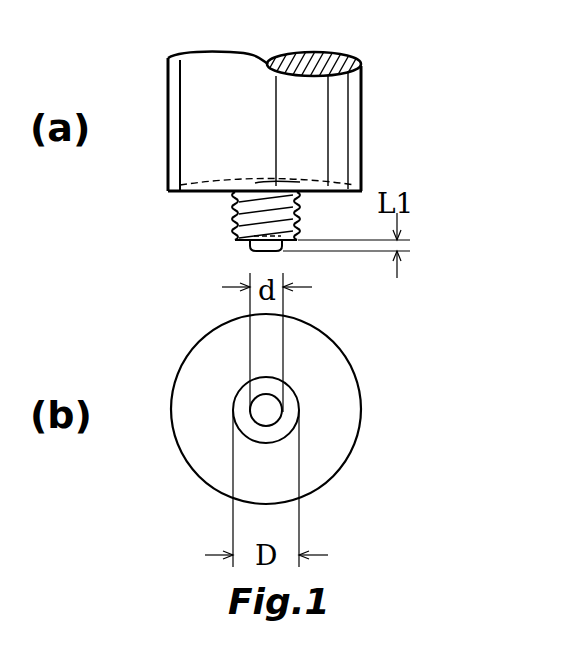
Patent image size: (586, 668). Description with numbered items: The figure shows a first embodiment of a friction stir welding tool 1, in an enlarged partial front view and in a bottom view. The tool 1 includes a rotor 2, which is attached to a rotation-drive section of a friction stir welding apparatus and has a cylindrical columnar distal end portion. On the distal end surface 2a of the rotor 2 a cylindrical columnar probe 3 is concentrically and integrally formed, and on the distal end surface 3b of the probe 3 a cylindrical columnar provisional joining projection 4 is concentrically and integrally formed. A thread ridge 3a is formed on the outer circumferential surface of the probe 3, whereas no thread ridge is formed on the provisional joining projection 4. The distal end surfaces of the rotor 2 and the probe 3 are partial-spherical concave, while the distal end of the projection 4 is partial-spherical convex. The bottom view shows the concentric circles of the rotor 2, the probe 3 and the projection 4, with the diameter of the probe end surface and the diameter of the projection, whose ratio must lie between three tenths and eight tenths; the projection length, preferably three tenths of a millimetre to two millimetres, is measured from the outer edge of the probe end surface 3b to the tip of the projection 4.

The friction stir welding tool 1 is at (388, 102).
The rotor 2 is at (346, 152).
The distal end surface of the rotor 2a is at (186, 192).
The probe 3 is at (299, 211).
The thread ridge 3a is at (235, 213).
The distal end surface of the probe 3b is at (234, 241).
The provisional joining projection 4 is at (262, 251).